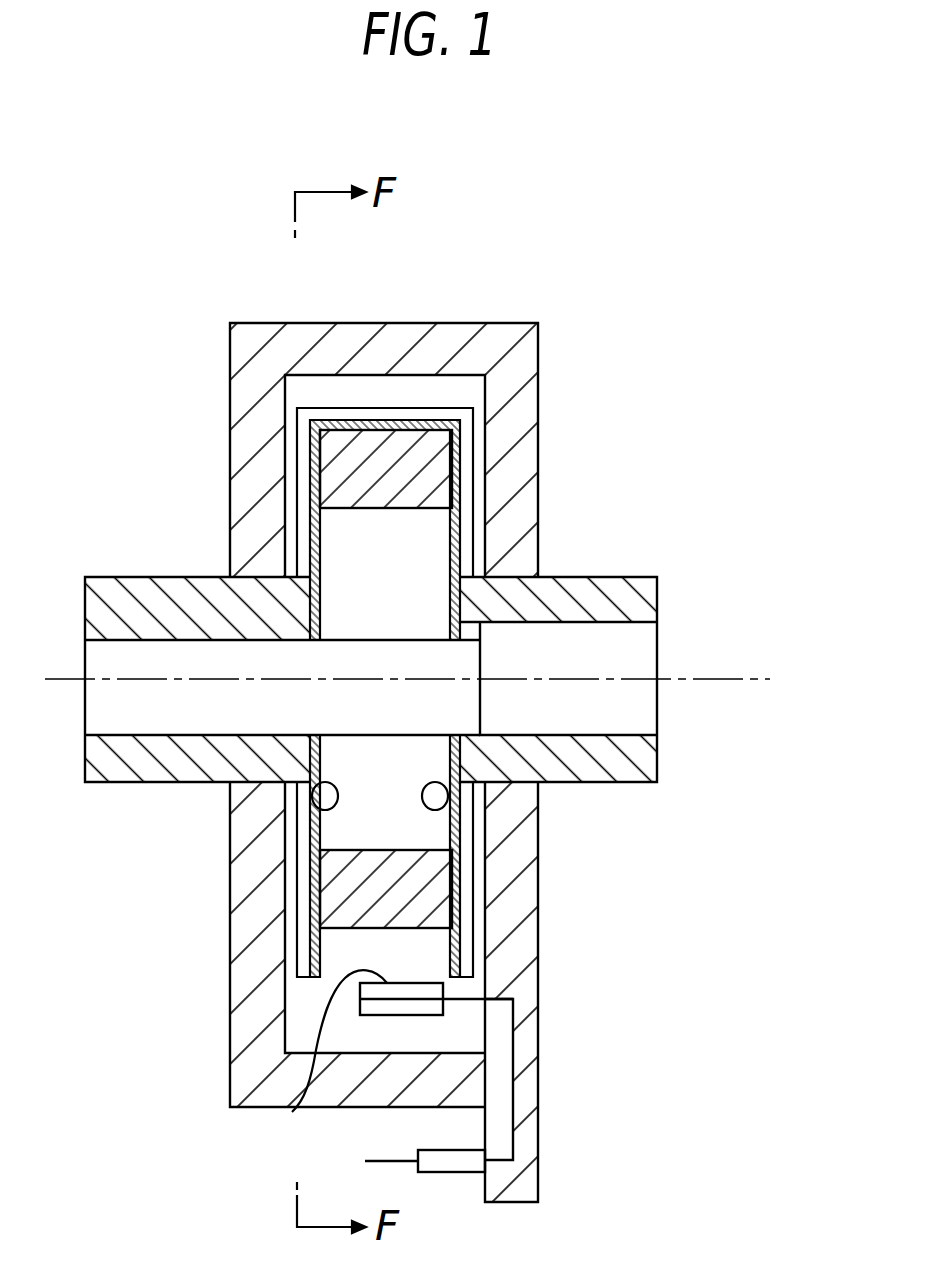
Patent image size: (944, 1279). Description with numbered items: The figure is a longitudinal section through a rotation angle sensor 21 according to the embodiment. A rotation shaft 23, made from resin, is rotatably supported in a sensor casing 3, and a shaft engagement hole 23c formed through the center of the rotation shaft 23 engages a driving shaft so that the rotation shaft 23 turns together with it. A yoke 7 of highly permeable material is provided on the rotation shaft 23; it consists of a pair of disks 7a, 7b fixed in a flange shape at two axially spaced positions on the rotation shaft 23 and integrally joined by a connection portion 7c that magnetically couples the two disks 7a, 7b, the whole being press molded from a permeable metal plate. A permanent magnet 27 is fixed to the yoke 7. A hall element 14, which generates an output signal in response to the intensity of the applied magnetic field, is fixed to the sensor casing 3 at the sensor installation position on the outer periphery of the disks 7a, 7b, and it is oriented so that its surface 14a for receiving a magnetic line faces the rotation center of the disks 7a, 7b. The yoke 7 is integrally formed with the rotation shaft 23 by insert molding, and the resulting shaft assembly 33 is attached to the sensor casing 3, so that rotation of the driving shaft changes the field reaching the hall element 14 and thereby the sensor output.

The rotation angle sensor 21 is at (514, 310).
The sensor casing 3 is at (541, 452).
The rotation shaft 23 is at (617, 577).
The shaft engagement hole 23c is at (600, 622).
The yoke 7 is at (345, 428).
The connection portion 7c is at (395, 410).
The disk 7a is at (320, 805).
The disk 7b is at (450, 805).
The permanent magnet 27 is at (360, 935).
The shaft assembly 33 is at (490, 998).
The hall element 14 is at (400, 1016).
The surface for receiving a magnetic line 14a is at (292, 1112).